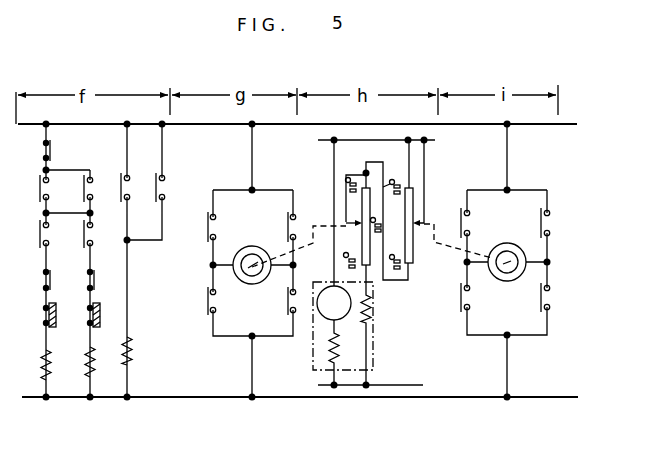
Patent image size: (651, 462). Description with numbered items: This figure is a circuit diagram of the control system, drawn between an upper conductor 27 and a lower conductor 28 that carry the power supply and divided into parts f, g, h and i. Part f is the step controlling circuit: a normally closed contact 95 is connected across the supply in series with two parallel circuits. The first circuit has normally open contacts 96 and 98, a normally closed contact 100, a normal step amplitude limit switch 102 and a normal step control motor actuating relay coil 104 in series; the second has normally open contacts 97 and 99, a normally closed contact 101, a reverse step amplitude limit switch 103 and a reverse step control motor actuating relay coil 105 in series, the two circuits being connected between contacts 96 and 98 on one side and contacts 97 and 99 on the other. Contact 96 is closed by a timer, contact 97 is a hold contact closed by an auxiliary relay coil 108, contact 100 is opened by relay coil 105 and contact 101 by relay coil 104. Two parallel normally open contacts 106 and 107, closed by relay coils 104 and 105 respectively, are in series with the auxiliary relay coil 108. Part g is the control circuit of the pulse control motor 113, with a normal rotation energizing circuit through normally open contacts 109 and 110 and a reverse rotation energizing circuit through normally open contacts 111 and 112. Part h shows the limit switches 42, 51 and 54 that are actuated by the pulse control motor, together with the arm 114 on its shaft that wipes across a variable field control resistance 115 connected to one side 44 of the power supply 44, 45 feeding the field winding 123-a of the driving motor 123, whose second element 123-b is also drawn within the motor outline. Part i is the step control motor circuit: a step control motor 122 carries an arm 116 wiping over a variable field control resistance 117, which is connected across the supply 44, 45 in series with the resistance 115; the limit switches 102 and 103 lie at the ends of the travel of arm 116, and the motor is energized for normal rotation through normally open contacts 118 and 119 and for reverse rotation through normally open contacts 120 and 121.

The positive supply bus 27 is at (26, 124).
The negative supply bus 28 is at (30, 399).
The normally closed contact 95 is at (48, 152).
The normally open contact 96 is at (40, 188).
The hold contact 97 is at (84, 188).
The normally open contact 98 is at (40, 236).
The normally open contact 99 is at (84, 234).
The normally closed contact 100 is at (46, 280).
The normally closed contact 101 is at (94, 280).
The normal step amplitude limit switch 102 is at (48, 315).
The reverse step amplitude limit switch 103 is at (92, 318).
The normal step control motor actuating relay coil 104 is at (44, 365).
The reverse step control motor actuating relay coil 105 is at (88, 355).
The normally open contact 106 is at (121, 188).
The normally open contact 107 is at (156, 188).
The auxiliary relay coil 108 is at (132, 350).
The normally open contact 109 is at (208, 228).
The normally open contact 110 is at (288, 300).
The normally open contact 111 is at (288, 228).
The normally open contact 112 is at (208, 302).
The pulse control motor 113 is at (250, 262).
The arm 114 is at (342, 221).
The variable field control resistance 115 is at (346, 197).
The arm 116 is at (434, 240).
The variable field control resistance 117 is at (413, 198).
The normally open contact 118 is at (460, 223).
The normally open contact 119 is at (541, 296).
The normally open contact 120 is at (541, 226).
The normally open contact 121 is at (460, 289).
The step control motor 122 is at (502, 258).
The driving motor 123 is at (362, 340).
The field winding 123-a is at (372, 316).
The relay coil 123-b is at (318, 306).
The power supply side 44 is at (318, 140).
The power supply side 45 is at (318, 385).
The limit switch 51 is at (348, 177).
The limit switch 54 is at (346, 252).
The limit switch 42 is at (387, 221).